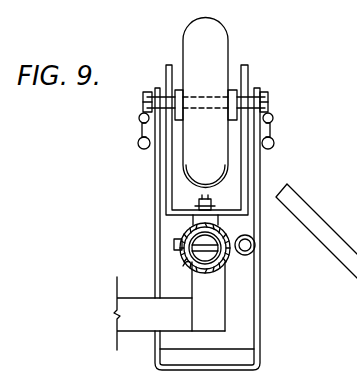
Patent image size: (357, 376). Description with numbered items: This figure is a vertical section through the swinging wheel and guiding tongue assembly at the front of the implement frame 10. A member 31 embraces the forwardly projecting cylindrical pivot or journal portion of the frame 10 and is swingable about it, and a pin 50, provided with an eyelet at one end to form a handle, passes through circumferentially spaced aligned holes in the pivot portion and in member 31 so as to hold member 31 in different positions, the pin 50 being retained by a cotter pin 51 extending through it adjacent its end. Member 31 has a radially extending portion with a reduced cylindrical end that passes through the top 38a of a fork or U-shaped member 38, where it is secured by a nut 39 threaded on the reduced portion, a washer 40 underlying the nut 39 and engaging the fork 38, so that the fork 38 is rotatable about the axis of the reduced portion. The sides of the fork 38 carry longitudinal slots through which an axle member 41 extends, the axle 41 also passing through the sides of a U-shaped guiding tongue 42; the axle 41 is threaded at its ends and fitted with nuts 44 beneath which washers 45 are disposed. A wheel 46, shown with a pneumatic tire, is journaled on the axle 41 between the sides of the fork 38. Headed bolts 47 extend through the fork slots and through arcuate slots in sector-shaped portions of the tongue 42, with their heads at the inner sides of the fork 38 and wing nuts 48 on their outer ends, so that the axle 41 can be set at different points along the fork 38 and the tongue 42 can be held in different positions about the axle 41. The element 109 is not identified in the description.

The frame 10 is at (147, 326).
The member 31 is at (227, 281).
The fork or U-shaped member 38 is at (249, 167).
The top of fork 38a is at (232, 220).
The nut 39 is at (200, 205).
The washer 40 is at (197, 202).
The axle member 41 is at (213, 96).
The guiding tongue 42 is at (259, 316).
The nuts 44 is at (266, 100).
The washers 45 is at (261, 92).
The wheel 46 is at (217, 37).
The headed bolts 47 is at (228, 126).
The wing nuts 48 is at (139, 121).
The pin 50 is at (174, 243).
The cotter pin 51 is at (183, 266).
The pin 109 is at (230, 262).